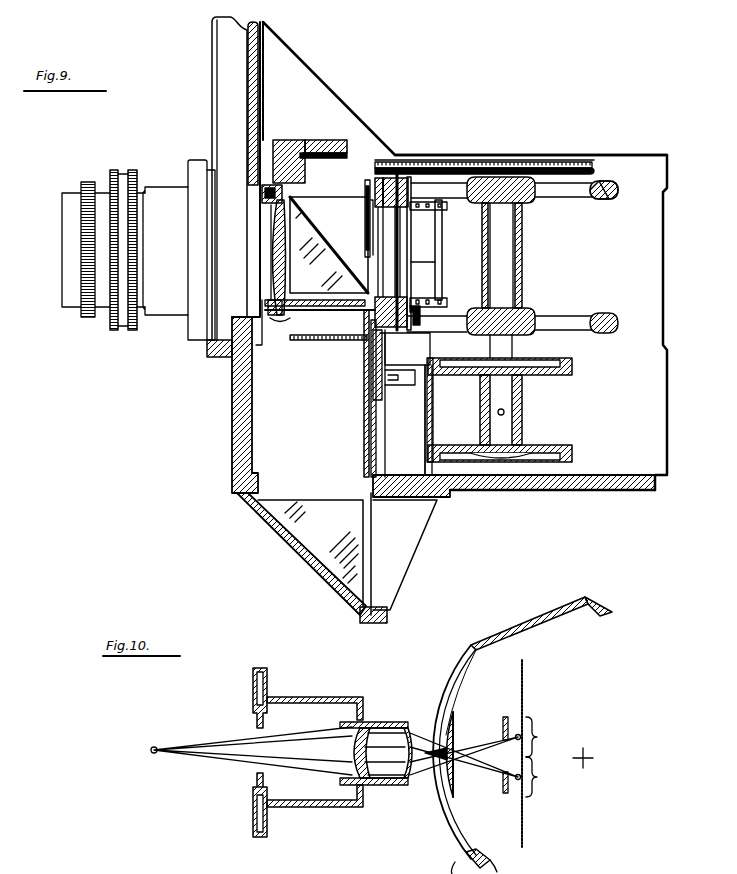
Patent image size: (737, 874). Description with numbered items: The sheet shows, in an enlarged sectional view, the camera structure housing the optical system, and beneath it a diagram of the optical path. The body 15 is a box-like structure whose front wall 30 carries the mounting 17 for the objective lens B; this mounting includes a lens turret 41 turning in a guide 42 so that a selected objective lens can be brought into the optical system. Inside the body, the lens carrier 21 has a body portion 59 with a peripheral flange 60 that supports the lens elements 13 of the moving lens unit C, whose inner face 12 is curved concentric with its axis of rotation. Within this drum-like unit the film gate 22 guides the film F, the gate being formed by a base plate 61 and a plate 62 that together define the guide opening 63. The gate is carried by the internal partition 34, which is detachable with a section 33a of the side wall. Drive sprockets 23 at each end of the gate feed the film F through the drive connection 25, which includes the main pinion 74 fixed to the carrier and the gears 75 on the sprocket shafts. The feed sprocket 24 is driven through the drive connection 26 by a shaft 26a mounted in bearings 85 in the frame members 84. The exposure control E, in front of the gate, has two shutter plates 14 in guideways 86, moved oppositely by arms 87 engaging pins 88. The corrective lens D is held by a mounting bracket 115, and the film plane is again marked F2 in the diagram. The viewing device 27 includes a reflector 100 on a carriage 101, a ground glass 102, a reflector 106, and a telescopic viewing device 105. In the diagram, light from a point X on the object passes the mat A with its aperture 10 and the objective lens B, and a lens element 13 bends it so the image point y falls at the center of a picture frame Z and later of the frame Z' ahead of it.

In FIG. 9, the lens turret 41 is at (228, 110).
In FIG. 9, the guide 42 is at (214, 355).
In FIG. 9, the front wall 30 is at (232, 402).
In FIG. 9, the mounting 17 is at (220, 466).
In FIG. 9, the body 15 is at (601, 494).
In FIG. 9, the lens carrier 21 is at (302, 140).
In FIG. 9, the body of the lens carrier 59 is at (330, 140).
In FIG. 9, the peripheral flange 60 is at (262, 190).
In FIG. 9, the inner face 12 is at (276, 248).
In FIG. 9, the lens elements 13 is at (278, 288).
In FIG. 10, the lens elements 13 is at (600, 608).
In FIG. 9, the reflector 100 is at (335, 256).
In FIG. 9, the corrective lens D is at (290, 303).
In FIG. 10, the corrective lens D is at (452, 780).
In FIG. 9, the guideways 86 is at (372, 305).
In FIG. 9, the mounting bracket 115 is at (292, 320).
In FIG. 9, the arms 87 is at (366, 195).
In FIG. 9, the exposure control E is at (372, 210).
In FIG. 10, the exposure control E is at (505, 780).
In FIG. 9, the guide opening 63 is at (378, 226).
In FIG. 9, the base plate 61 is at (398, 166).
In FIG. 9, the gears 75 is at (384, 165).
In FIG. 9, the plate 62 is at (443, 162).
In FIG. 9, the main pinion 74 is at (508, 162).
In FIG. 9, the drive connection 25 is at (560, 155).
In FIG. 9, the film gate 22 is at (432, 282).
In FIG. 9, the drive sprockets 23 is at (434, 243).
In FIG. 9, the shutter plates 14 is at (415, 225).
In FIG. 10, the shutter plates 14 is at (503, 728).
In FIG. 9, the film F is at (412, 264).
In FIG. 10, the film F is at (524, 690).
In FIG. 9, the focal plane F2 is at (435, 410).
In FIG. 9, the bearings 85 is at (533, 200).
In FIG. 9, the frame members 84 is at (606, 200).
In FIG. 9, the pins 88 is at (535, 316).
In FIG. 9, the shaft 26a is at (522, 255).
In FIG. 9, the drive connection 26 is at (518, 291).
In FIG. 9, the feed sprocket 24 is at (531, 417).
In FIG. 9, the ground glass 102 is at (323, 343).
In FIG. 9, the carriage 101 is at (363, 433).
In FIG. 9, the focusing or viewing device 27 is at (345, 352).
In FIG. 9, the internal partition 34 is at (363, 458).
In FIG. 9, the section of the side wall 33a is at (373, 480).
In FIG. 9, the reflector 106 is at (305, 548).
In FIG. 9, the telescopic viewing device 105 is at (418, 532).
In FIG. 9, the objective lens B is at (159, 310).
In FIG. 10, the objective lens B is at (393, 782).
In FIG. 9, the moving lens unit C is at (263, 322).
In FIG. 10, the point X is at (153, 754).
In FIG. 10, the exposure aperture 10 is at (258, 727).
In FIG. 10, the mat A is at (258, 779).
In FIG. 10, the point y is at (518, 734).
In FIG. 10, the picture frame Z is at (537, 737).
In FIG. 10, the picture frame Z' is at (539, 777).